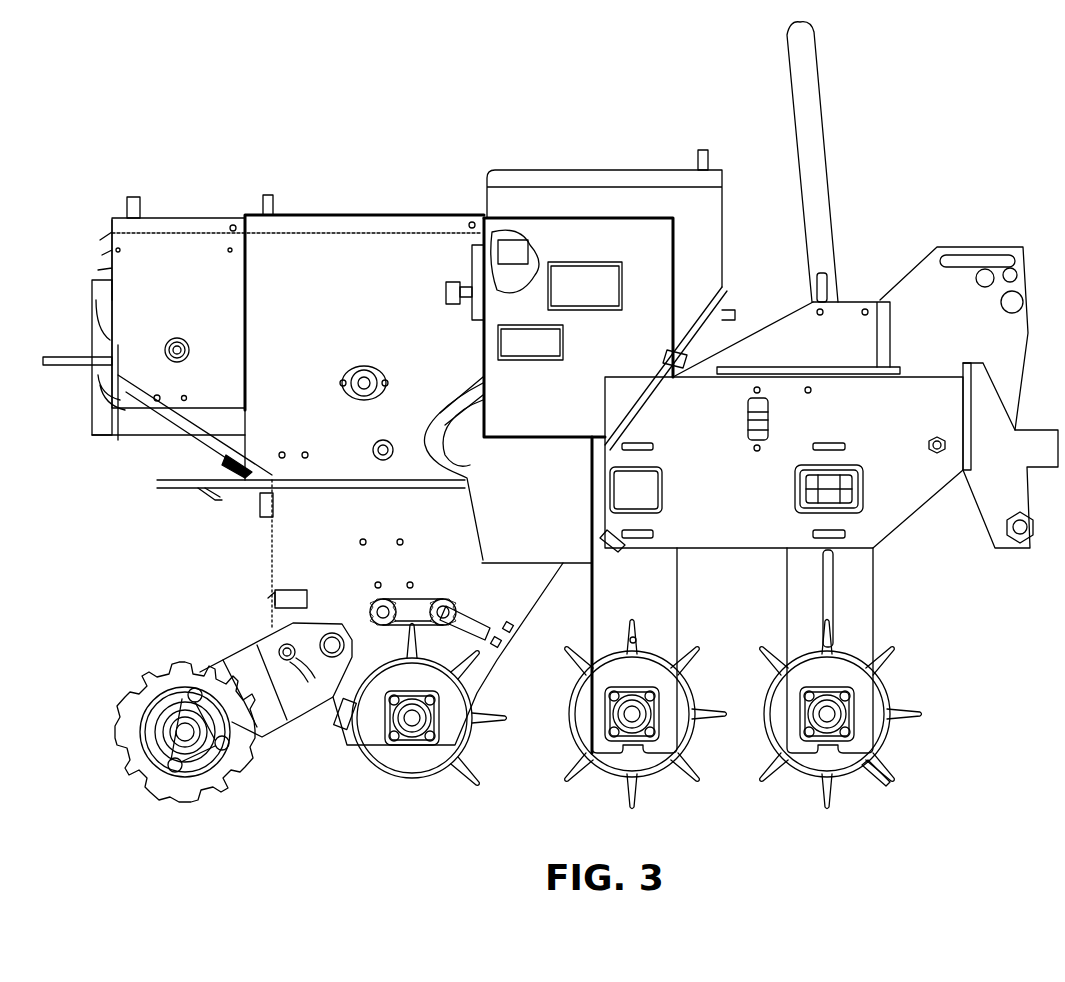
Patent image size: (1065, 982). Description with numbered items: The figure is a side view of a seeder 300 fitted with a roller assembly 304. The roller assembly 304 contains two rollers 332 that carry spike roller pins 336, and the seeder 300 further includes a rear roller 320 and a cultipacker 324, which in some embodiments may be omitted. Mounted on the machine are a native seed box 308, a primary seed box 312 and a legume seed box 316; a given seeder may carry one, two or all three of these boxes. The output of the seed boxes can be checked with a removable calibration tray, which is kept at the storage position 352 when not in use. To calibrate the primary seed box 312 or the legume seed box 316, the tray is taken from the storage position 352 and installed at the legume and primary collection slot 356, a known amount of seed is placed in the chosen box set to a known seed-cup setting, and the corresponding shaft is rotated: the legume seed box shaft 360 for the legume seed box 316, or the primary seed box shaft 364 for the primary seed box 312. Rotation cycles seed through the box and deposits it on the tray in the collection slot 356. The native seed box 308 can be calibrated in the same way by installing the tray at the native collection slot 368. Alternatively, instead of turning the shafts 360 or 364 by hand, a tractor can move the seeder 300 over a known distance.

The seeder 300 is at (310, 120).
The roller assembly 304 is at (944, 747).
The native seed box 308 is at (535, 200).
The primary seed box 312 is at (295, 373).
The legume seed box 316 is at (163, 400).
The rear roller 320 is at (385, 758).
The cultipacker 324 is at (190, 745).
The rollers 332 is at (575, 750).
The spike roller pins 336 is at (878, 767).
The storage position 352 is at (748, 433).
The legume and primary collection slot 356 is at (410, 605).
The legume seed box shaft 360 is at (176, 340).
The primary seed box shaft 364 is at (385, 440).
The native collection slot 368 is at (472, 622).